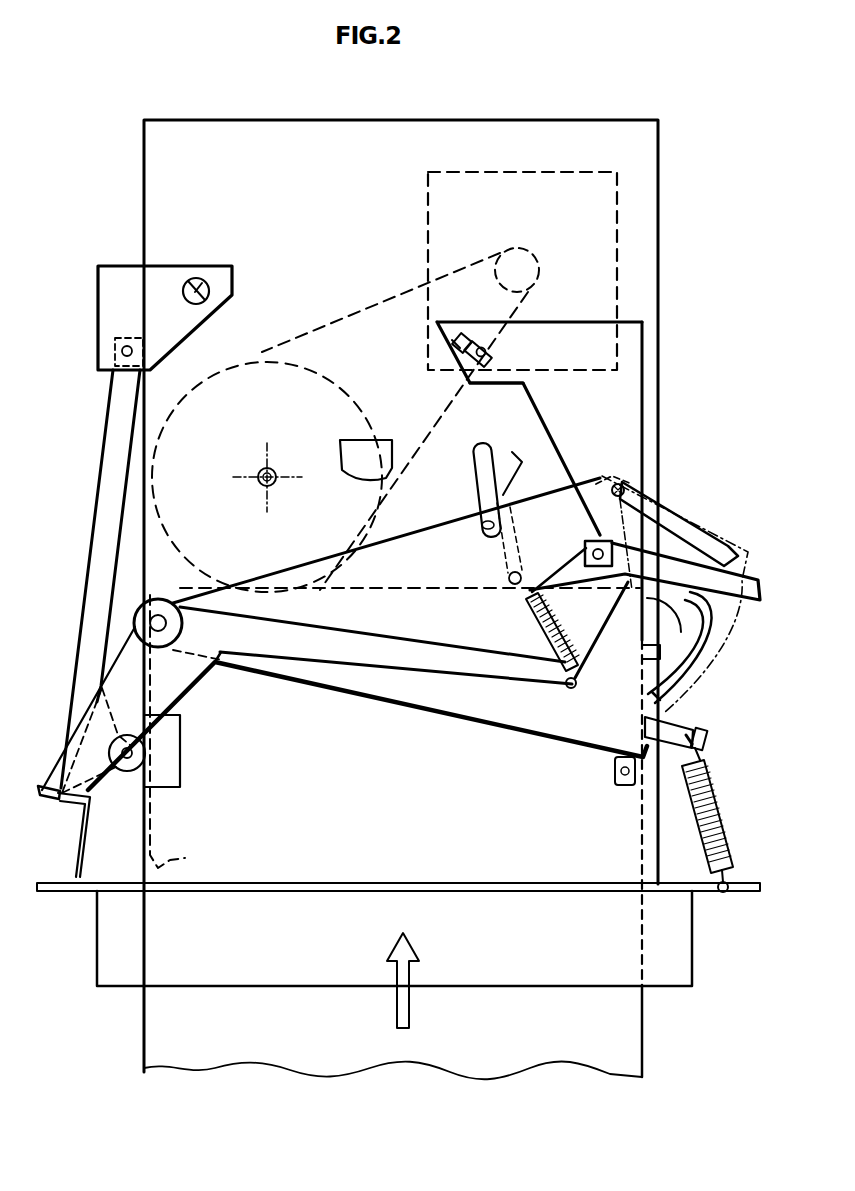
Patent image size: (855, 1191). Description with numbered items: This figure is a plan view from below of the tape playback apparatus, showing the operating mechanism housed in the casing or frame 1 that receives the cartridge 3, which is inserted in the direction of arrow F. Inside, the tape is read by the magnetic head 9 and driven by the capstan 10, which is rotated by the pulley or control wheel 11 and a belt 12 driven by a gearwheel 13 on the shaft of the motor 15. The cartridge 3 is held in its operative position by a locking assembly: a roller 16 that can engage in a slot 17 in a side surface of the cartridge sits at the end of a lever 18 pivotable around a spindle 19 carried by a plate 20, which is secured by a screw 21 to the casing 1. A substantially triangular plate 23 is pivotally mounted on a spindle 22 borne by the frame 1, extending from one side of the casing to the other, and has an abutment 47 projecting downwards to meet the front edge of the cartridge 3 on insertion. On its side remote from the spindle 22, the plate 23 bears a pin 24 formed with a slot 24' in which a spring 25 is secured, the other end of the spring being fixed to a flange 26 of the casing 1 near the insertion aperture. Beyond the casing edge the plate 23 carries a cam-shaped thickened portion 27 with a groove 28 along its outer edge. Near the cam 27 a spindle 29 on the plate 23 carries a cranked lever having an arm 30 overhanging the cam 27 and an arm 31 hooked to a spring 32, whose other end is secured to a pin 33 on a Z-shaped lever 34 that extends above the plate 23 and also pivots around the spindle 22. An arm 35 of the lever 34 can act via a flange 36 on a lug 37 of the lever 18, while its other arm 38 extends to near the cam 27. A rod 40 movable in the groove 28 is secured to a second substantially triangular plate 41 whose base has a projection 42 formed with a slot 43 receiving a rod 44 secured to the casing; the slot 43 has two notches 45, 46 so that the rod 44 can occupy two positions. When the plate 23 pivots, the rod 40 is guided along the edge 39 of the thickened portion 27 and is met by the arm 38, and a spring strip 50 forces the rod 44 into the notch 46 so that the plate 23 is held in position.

The casing or frame 1 is at (271, 107).
The cartridge 3 is at (640, 1018).
The magnetic head 9 is at (352, 446).
The capstan 10 is at (260, 470).
The pulley or control wheel 11 is at (350, 392).
The belt 12 is at (390, 298).
The gearwheel 13 is at (532, 260).
The motor 15 is at (432, 203).
The roller 16 is at (131, 770).
The slot 17 is at (182, 733).
The lever 18 is at (95, 526).
The spindle 19 is at (122, 351).
The plate 20 is at (118, 280).
The screw 21 is at (195, 278).
The spindle 22 is at (160, 612).
The triangular plate 23 is at (410, 706).
The pin 24 is at (729, 742).
The slot 24' is at (722, 714).
The spring 25 is at (726, 822).
The flange 26 is at (718, 895).
The cam-shaped thickened portion 27 is at (694, 542).
The groove 28 is at (740, 549).
The spindle 29 is at (587, 548).
The arm 30 is at (705, 600).
The arm 31 is at (556, 575).
The spring 32 is at (540, 616).
The pin 33 is at (578, 686).
The Z-shaped lever 34 is at (512, 680).
The arm 35 is at (95, 706).
The flange 36 is at (52, 789).
The lug 37 is at (80, 848).
The arm 38 is at (598, 635).
The edge 39 is at (688, 645).
The rod 40 is at (630, 486).
The triangular plate 41 is at (648, 410).
The projection 42 is at (490, 385).
The slot 43 is at (461, 336).
The rod 44 is at (489, 353).
The notch 45 is at (464, 363).
The notch 46 is at (456, 352).
The abutment 47 is at (509, 580).
The spring strip 50 is at (480, 506).